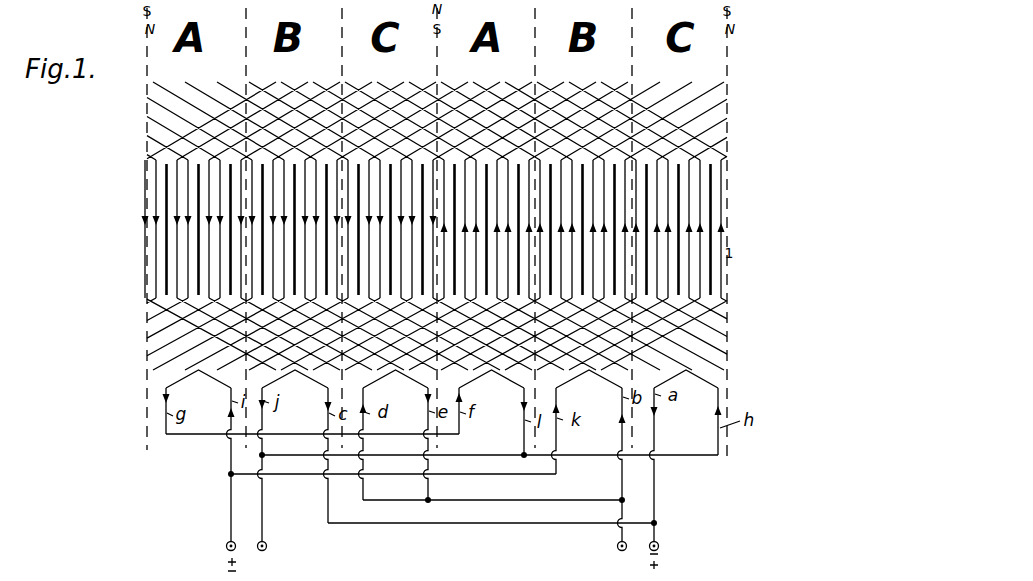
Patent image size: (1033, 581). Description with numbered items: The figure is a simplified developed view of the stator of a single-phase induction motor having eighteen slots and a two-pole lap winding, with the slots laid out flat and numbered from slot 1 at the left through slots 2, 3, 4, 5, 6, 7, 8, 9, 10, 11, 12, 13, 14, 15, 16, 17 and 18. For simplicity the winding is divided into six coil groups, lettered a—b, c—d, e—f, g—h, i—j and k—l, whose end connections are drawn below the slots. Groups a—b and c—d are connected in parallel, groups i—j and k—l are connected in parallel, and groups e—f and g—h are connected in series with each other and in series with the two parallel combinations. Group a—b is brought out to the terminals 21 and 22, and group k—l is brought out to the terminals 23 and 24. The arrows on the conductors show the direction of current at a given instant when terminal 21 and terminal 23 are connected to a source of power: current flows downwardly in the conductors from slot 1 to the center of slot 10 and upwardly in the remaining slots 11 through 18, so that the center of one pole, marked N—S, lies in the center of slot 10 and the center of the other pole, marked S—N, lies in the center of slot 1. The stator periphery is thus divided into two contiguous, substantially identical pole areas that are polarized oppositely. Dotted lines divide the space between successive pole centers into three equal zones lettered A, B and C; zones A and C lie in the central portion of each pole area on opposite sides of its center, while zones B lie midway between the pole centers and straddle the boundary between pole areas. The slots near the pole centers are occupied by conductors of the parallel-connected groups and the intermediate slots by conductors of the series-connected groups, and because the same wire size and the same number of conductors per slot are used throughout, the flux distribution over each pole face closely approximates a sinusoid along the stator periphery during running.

The slot 1 is at (155, 229).
The slot 2 is at (182, 229).
The slot 3 is at (214, 229).
The slot 4 is at (246, 229).
The slot 5 is at (278, 229).
The slot 6 is at (310, 229).
The slot 7 is at (342, 229).
The slot 8 is at (374, 229).
The slot 9 is at (406, 229).
The slot 10 is at (439, 229).
The slot 11 is at (471, 229).
The slot 12 is at (503, 229).
The slot 13 is at (535, 229).
The slot 14 is at (567, 229).
The slot 15 is at (599, 229).
The slot 16 is at (631, 229).
The slot 17 is at (663, 229).
The slot 18 is at (695, 229).
The terminal 21 is at (658, 545).
The terminal 22 is at (620, 550).
The terminal 23 is at (226, 547).
The terminal 24 is at (266, 547).